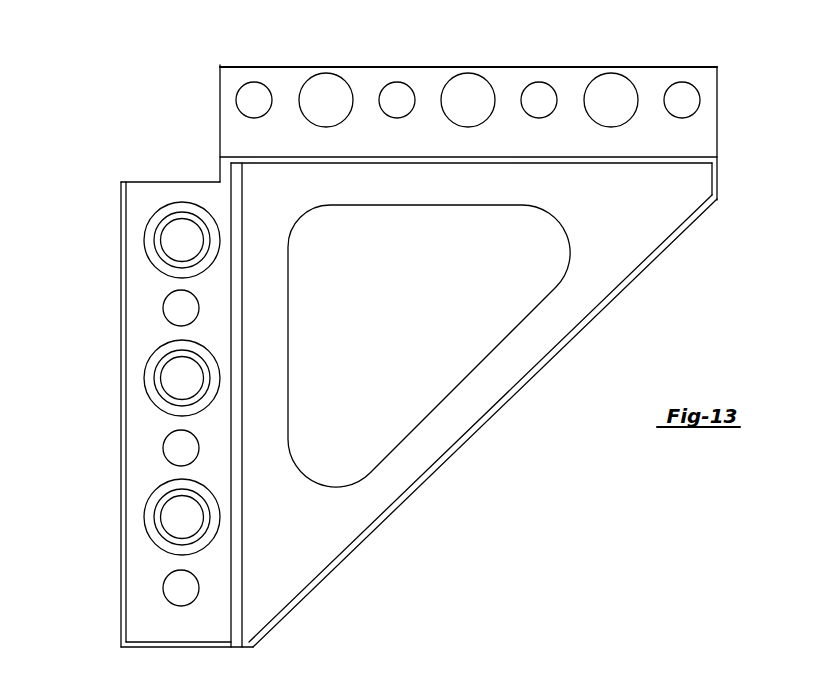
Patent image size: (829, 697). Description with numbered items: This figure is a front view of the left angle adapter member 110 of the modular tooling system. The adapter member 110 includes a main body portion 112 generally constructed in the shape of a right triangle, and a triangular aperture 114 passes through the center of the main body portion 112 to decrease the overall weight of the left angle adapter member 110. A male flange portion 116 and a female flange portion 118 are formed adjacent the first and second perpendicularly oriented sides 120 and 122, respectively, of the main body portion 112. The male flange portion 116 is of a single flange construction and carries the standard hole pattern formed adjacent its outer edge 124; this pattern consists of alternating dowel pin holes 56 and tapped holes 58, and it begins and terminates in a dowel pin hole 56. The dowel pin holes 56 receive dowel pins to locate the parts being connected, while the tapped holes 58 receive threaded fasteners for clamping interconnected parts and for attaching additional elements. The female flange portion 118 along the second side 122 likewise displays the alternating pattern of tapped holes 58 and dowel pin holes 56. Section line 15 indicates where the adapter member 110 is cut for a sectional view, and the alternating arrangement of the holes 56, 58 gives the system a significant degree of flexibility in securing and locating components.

The left angle adapter member 110 is at (158, 88).
The male flange portion 116 is at (358, 69).
The female flange portion 118 is at (118, 475).
The main body portion 112 is at (627, 242).
The triangular aperture 114 is at (458, 355).
The first side 120 is at (429, 157).
The second side 122 is at (268, 560).
The outer edge 124 is at (507, 68).
The tapped hole 58 is at (614, 73).
The dowel pin hole 56 is at (690, 93).
The section line 15- 15 is at (138, 378).